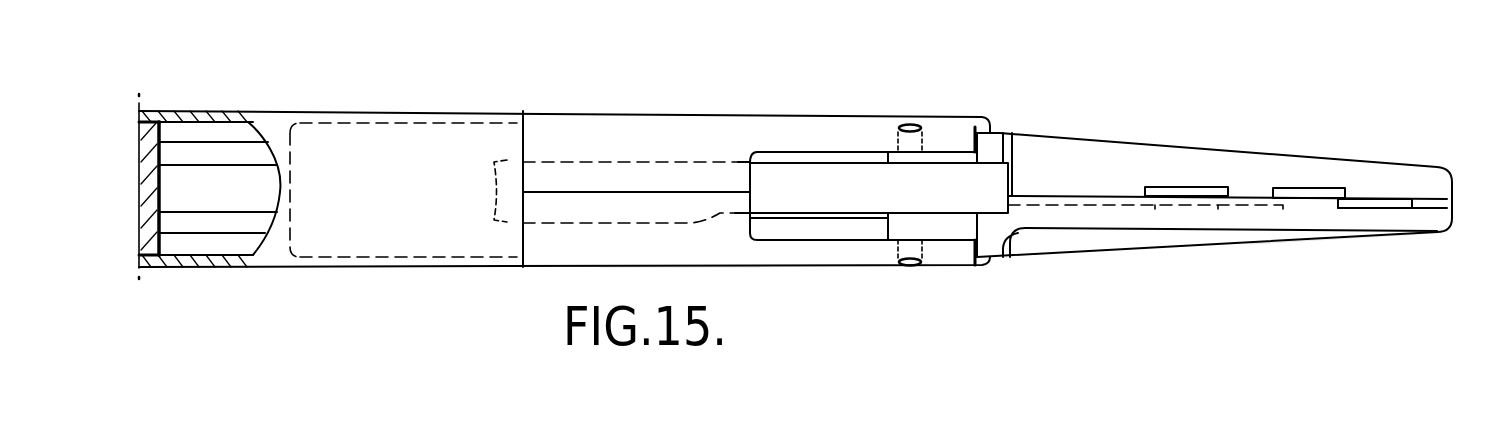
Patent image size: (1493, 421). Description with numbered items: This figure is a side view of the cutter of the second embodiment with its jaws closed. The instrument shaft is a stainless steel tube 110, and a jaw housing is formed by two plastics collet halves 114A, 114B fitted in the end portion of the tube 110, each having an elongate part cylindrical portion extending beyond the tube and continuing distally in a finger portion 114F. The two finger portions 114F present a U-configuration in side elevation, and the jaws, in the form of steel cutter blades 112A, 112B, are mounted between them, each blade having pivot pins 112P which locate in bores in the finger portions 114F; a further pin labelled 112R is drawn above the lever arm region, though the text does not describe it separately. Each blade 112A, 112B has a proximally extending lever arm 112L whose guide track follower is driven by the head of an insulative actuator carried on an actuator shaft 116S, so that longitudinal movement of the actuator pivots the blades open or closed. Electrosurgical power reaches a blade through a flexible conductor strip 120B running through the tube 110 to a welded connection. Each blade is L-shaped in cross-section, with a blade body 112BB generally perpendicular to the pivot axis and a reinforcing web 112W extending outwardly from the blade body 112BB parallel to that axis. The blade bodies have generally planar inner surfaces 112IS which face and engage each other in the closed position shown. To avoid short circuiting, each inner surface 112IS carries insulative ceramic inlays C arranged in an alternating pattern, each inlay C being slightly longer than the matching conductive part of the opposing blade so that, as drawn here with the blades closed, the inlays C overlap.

The stainless steel tube 110 is at (276, 127).
The actuator shaft 116S is at (237, 217).
The collet half 114A is at (588, 135).
The collet half 114B is at (720, 258).
The finger portion 114F is at (863, 133).
The lever arm 112L is at (773, 155).
The retaining pin 112R is at (921, 135).
The pivot pin 112P is at (927, 250).
The flexible conductor strip 120B is at (875, 195).
The reinforcing web 112W is at (1092, 160).
The blade body 112BB is at (1197, 207).
The ceramic inlay C is at (1195, 188).
The cutter blade 112A is at (1298, 120).
The cutter blade 112B is at (1333, 243).
The inner surface 112IS is at (1413, 206).